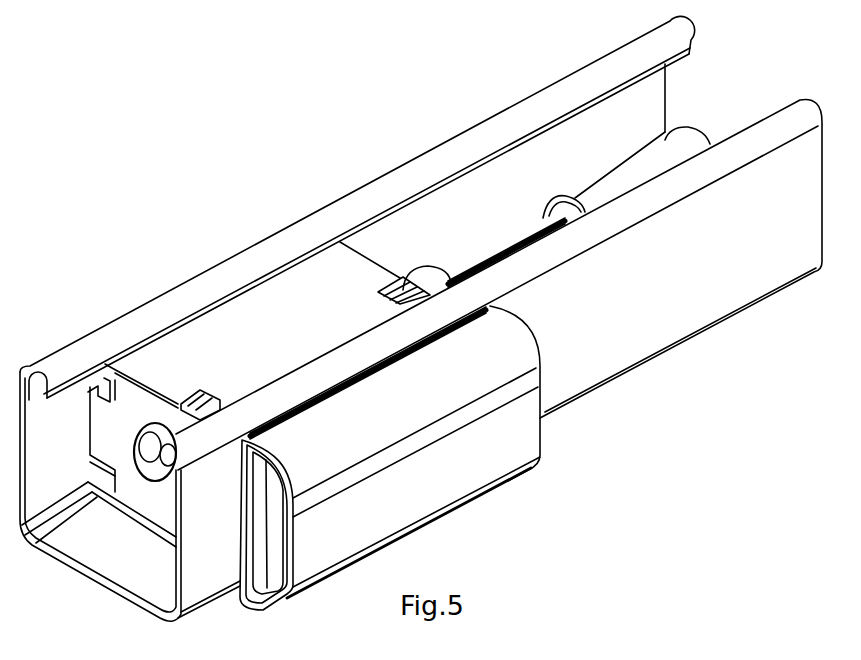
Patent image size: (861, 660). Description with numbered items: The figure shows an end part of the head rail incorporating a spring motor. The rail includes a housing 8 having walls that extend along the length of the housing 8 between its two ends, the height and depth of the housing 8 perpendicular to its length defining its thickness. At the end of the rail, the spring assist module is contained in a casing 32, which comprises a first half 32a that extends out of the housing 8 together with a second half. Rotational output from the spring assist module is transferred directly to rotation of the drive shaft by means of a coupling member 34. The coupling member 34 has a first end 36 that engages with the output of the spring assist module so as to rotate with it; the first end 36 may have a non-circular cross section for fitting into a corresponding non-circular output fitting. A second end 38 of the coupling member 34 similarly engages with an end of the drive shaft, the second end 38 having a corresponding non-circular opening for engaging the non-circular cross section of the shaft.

The housing 8 is at (493, 123).
The casing 32 is at (230, 322).
The first half 32a is at (510, 437).
The coupling member 34 is at (502, 247).
The first end 36 is at (417, 273).
The second end 38 is at (632, 160).